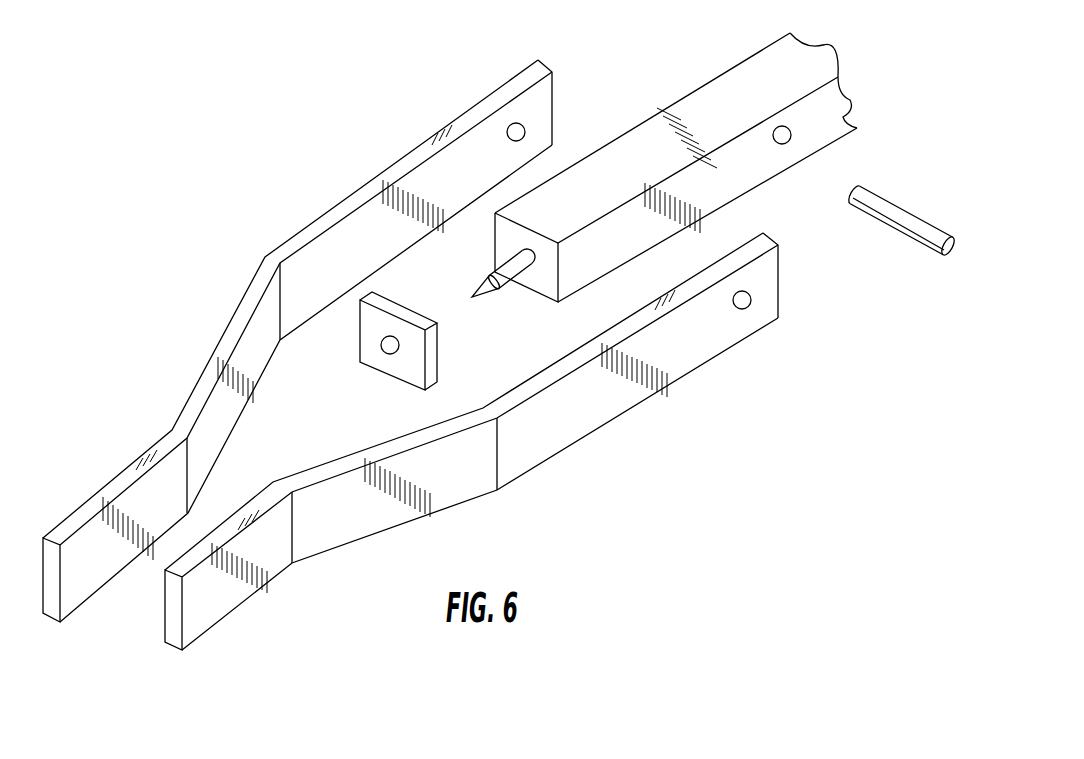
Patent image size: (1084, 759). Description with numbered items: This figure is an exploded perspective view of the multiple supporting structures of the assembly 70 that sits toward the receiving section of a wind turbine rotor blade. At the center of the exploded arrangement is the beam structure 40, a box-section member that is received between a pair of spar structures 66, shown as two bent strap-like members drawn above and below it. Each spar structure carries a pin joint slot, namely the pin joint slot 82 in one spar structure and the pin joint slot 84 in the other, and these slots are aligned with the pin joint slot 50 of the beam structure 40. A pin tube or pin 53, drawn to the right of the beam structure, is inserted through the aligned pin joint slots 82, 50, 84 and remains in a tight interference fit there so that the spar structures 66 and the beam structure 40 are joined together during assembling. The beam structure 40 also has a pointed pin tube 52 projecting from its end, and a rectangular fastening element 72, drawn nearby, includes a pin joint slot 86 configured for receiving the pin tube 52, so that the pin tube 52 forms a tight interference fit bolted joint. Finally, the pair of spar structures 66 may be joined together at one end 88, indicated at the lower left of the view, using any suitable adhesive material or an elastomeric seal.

The beam structure 40 is at (735, 77).
The pin joint slot 50 is at (784, 144).
The pin tube 52 is at (485, 293).
The pin 53 is at (882, 202).
The spar structures 66 is at (268, 268).
The assembly 70 is at (178, 130).
The rectangular fastening element 72 is at (418, 318).
The pin joint slot 82 is at (743, 309).
The pin joint slot 84 is at (511, 126).
The pin joint slot 86 is at (403, 368).
The end 88 is at (95, 625).